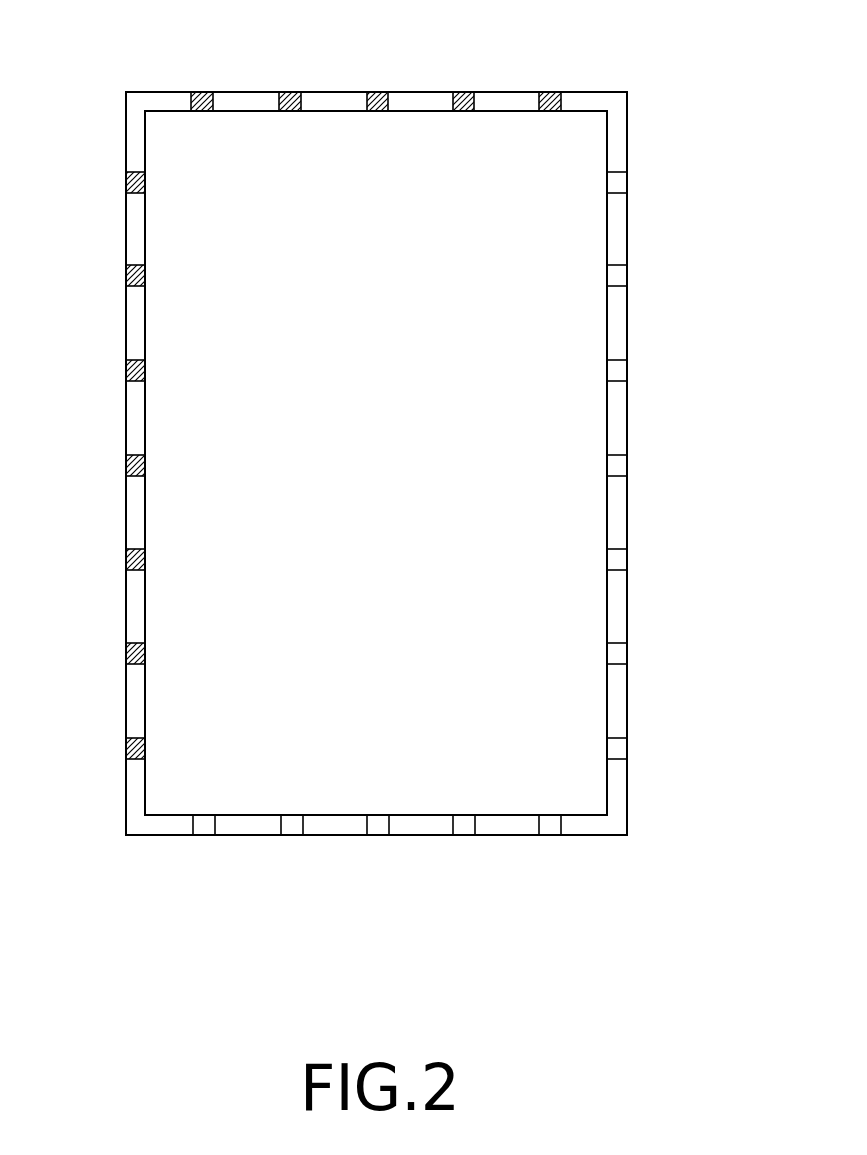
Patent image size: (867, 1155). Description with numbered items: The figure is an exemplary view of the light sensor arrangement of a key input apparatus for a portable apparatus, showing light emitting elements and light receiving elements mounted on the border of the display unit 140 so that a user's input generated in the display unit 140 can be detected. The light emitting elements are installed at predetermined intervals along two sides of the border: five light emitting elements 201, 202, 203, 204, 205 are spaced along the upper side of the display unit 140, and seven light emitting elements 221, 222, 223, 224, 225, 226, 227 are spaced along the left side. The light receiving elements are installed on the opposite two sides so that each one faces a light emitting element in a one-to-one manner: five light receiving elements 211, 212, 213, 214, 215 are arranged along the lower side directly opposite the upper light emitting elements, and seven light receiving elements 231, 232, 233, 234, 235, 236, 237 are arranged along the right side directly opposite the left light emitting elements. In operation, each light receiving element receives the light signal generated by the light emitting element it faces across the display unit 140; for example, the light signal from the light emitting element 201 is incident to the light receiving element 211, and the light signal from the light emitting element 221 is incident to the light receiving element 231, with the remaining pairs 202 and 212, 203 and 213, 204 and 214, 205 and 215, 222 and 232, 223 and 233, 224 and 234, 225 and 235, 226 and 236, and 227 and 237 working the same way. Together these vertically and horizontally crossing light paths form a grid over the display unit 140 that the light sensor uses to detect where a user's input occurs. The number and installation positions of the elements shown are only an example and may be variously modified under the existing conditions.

The display unit 140 is at (573, 159).
The light emitting element 201 is at (201, 90).
The light emitting element 202 is at (289, 90).
The light emitting element 203 is at (376, 90).
The light emitting element 204 is at (462, 90).
The light emitting element 205 is at (548, 90).
The light receiving element 211 is at (205, 838).
The light receiving element 212 is at (293, 838).
The light receiving element 213 is at (379, 838).
The light receiving element 214 is at (465, 838).
The light receiving element 215 is at (551, 838).
The light emitting element 221 is at (126, 184).
The light emitting element 222 is at (126, 277).
The light emitting element 223 is at (126, 372).
The light emitting element 224 is at (126, 467).
The light emitting element 225 is at (126, 561).
The light emitting element 226 is at (126, 655).
The light emitting element 227 is at (126, 750).
The light receiving element 231 is at (628, 180).
The light receiving element 232 is at (628, 273).
The light receiving element 233 is at (628, 368).
The light receiving element 234 is at (628, 463).
The light receiving element 235 is at (628, 557).
The light receiving element 236 is at (628, 651).
The light receiving element 237 is at (628, 746).